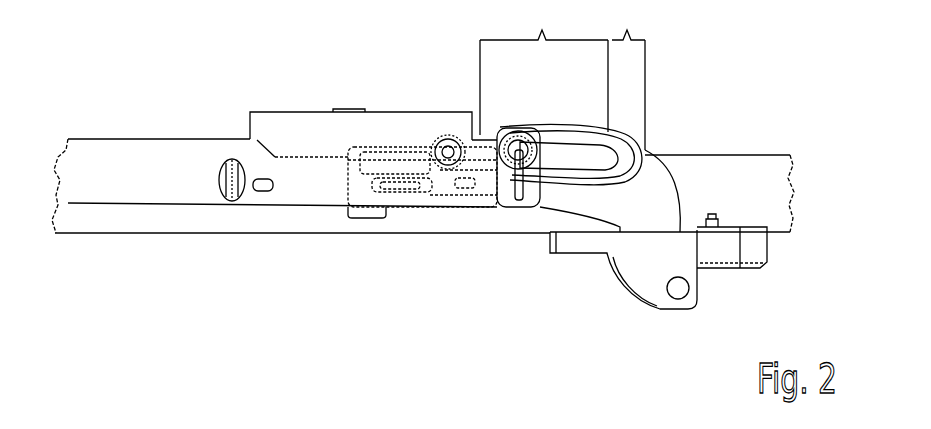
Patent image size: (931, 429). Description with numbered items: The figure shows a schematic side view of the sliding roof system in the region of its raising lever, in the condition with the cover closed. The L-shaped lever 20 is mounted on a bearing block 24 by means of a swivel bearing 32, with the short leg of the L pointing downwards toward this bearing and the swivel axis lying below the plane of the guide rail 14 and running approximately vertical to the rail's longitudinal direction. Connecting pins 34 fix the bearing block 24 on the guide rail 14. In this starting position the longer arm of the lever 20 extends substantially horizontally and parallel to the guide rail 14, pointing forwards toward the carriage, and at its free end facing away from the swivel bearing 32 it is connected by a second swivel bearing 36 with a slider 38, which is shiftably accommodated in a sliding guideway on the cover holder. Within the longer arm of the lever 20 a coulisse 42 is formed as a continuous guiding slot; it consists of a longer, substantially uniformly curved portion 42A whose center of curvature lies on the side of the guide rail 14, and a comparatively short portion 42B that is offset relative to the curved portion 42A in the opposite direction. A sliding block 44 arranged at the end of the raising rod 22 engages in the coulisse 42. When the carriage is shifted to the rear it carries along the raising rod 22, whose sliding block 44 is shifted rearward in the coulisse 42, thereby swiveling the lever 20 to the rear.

The guide rail 14 is at (170, 217).
The lever 20 is at (662, 188).
The raising rod 22 is at (183, 150).
The bearing block 24 is at (650, 288).
The swivel bearing 32 is at (678, 292).
The connecting pins 34 is at (713, 217).
The swivel bearing 36 is at (450, 140).
The slider 38 is at (408, 122).
The coulisse 42 is at (560, 150).
The curved portion 42A is at (544, 68).
The shorter portion 42B is at (629, 75).
The sliding block 44 is at (519, 138).